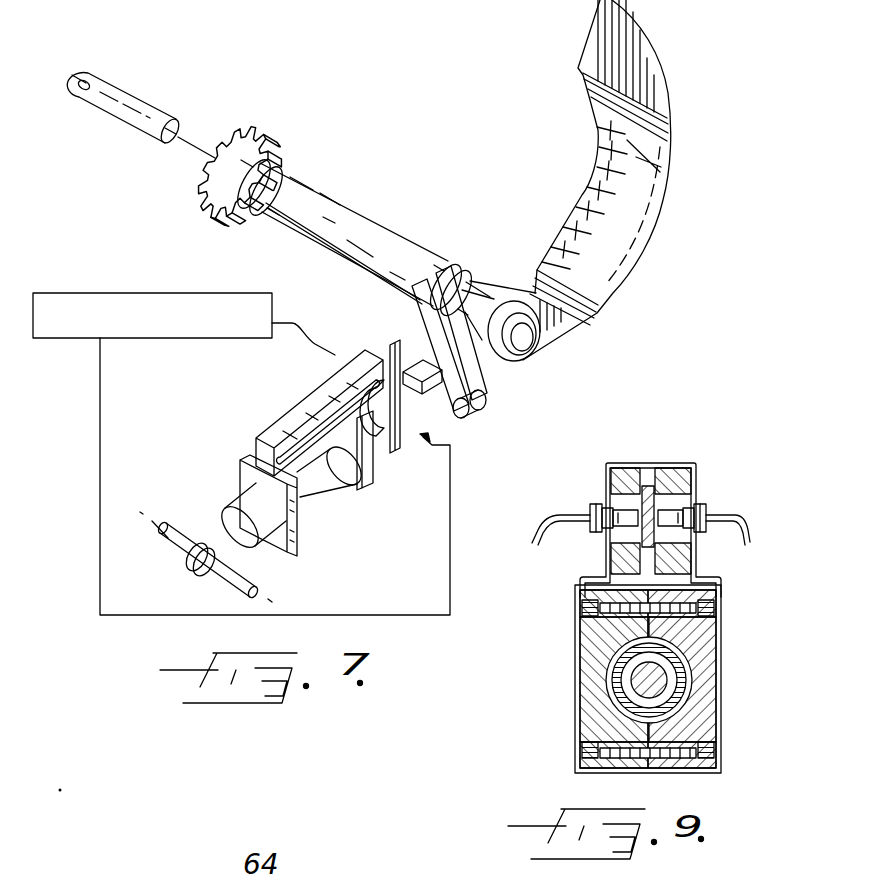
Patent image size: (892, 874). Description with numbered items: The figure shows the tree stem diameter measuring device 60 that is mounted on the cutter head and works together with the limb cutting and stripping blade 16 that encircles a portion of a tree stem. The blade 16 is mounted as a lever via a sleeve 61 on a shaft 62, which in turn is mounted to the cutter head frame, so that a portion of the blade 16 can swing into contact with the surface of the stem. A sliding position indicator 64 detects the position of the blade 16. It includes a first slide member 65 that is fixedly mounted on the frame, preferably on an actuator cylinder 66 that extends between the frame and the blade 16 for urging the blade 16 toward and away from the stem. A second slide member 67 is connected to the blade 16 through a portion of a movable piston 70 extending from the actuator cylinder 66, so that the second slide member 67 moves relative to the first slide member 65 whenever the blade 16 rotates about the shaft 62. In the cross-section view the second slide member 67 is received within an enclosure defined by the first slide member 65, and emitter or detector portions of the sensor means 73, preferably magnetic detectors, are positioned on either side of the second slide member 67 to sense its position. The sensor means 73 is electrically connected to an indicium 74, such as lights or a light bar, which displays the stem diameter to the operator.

In FIG. 7, the limb cutting and stripping blade 16 is at (643, 63).
In FIG. 7, the tree stem diameter measuring device 60 is at (361, 80).
In FIG. 7, the sleeve 61 is at (412, 262).
In FIG. 7, the shaft 62 is at (157, 104).
In FIG. 7, the sliding position indicator 64 is at (262, 405).
In FIG. 9, the sliding position indicator 64 is at (700, 476).
In FIG. 7, the first slide member 65 is at (266, 420).
In FIG. 9, the first slide member 65 is at (678, 472).
In FIG. 7, the actuator cylinder 66 is at (300, 502).
In FIG. 9, the actuator cylinder 66 is at (607, 693).
In FIG. 7, the second slide member 67 is at (404, 358).
In FIG. 9, the second slide member 67 is at (644, 486).
In FIG. 7, the movable piston 70 is at (457, 413).
In FIG. 7, the sensor means 73 is at (360, 352).
In FIG. 9, the sensor means 73 is at (590, 507).
In FIG. 7, the indicium 74 is at (153, 293).